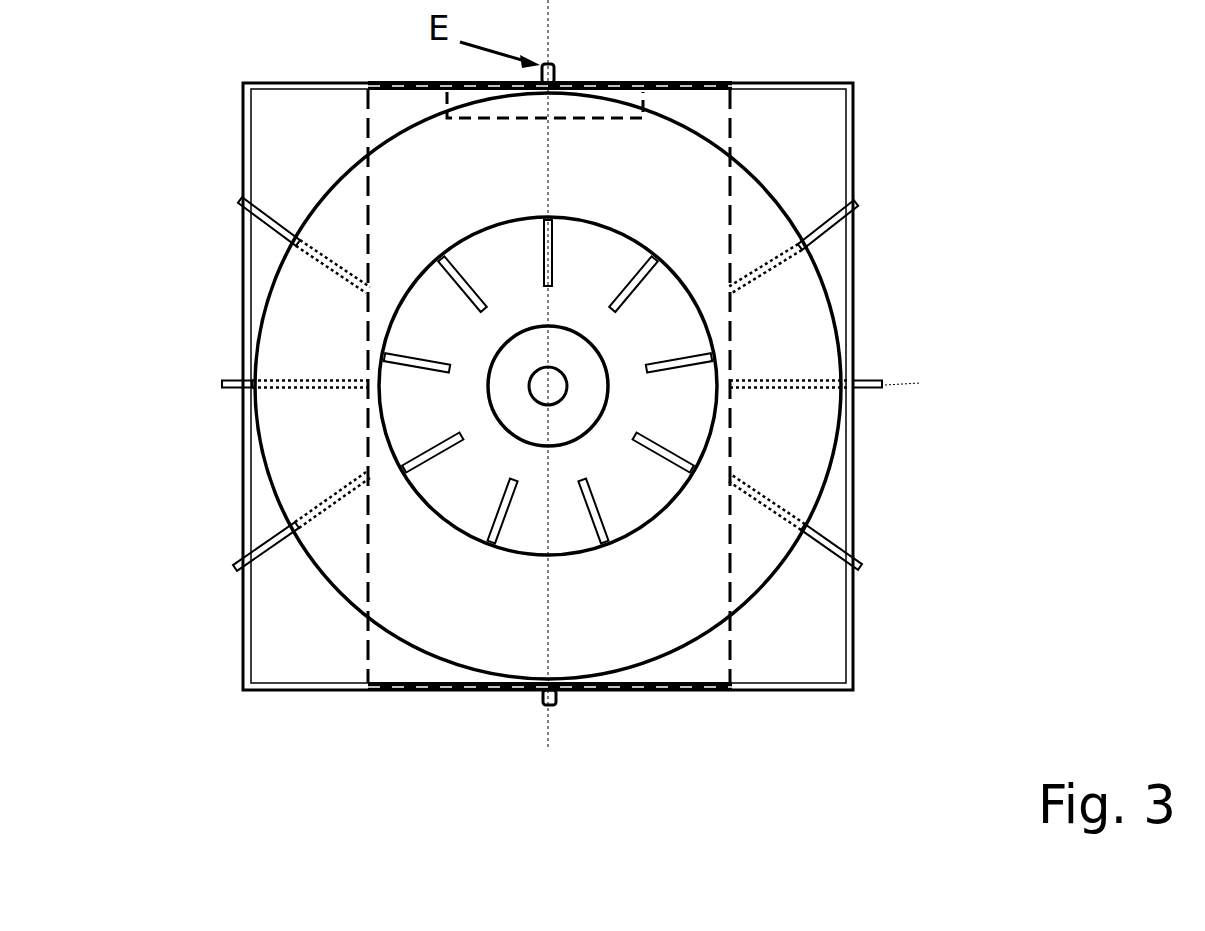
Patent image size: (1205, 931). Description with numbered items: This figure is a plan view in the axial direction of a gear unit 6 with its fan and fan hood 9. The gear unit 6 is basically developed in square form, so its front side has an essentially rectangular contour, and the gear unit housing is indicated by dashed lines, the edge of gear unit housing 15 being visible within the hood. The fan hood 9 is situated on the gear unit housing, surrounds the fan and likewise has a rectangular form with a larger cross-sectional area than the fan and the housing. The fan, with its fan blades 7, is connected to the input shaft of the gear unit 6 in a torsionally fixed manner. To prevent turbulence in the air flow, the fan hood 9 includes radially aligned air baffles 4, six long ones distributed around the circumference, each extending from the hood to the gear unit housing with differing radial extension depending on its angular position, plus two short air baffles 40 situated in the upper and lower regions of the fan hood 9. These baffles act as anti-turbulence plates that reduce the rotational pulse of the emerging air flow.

The air baffle 4 is at (268, 222).
The gear unit 6 is at (707, 120).
The fan blade 7 is at (643, 277).
The fan hood 9 is at (848, 653).
The edge of gear unit housing 15 is at (367, 622).
The air baffle 40 is at (556, 70).